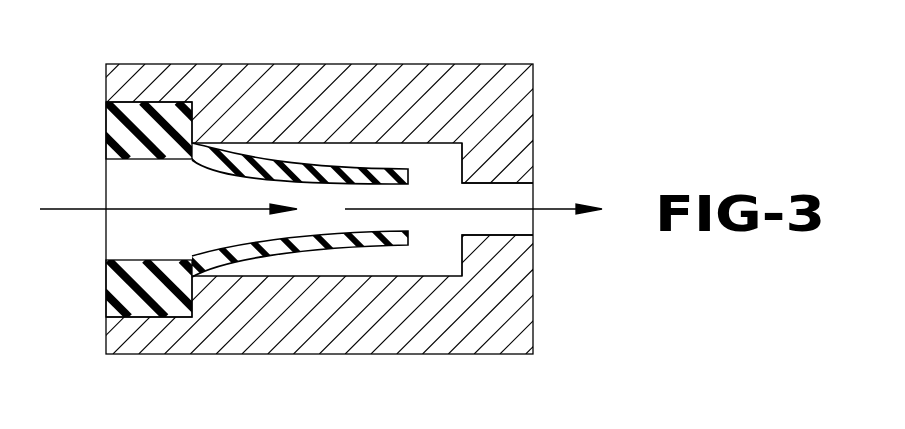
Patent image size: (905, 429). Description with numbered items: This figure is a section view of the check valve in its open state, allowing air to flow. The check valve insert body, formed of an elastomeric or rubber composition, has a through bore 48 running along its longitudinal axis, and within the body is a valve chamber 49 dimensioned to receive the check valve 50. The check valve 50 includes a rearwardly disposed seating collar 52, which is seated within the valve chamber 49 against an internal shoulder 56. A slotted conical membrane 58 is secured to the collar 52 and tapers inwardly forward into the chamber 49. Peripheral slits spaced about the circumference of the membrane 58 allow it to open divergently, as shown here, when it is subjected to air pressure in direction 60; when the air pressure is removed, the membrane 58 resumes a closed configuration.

The through bore 48 is at (506, 185).
The valve chamber 49 is at (432, 248).
The check valve 50 is at (150, 258).
The seating collar 52 is at (118, 126).
The internal shoulder 56 is at (191, 130).
The slotted conical membrane 58 is at (303, 253).
The direction of air pressure 60 is at (548, 210).